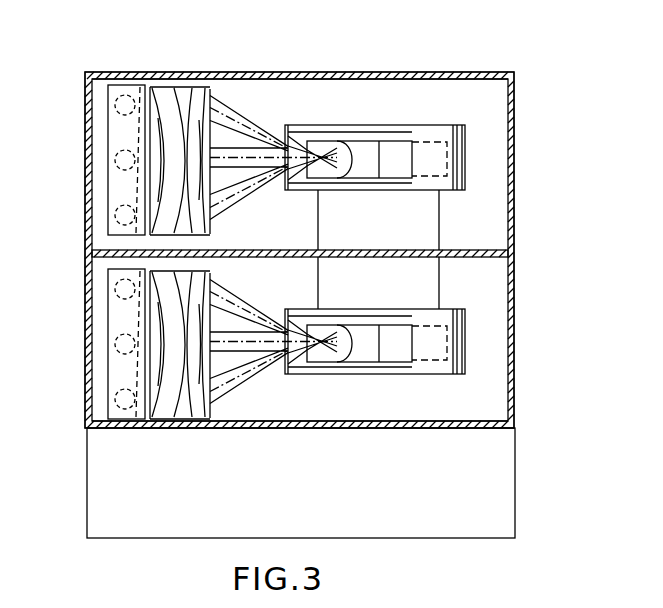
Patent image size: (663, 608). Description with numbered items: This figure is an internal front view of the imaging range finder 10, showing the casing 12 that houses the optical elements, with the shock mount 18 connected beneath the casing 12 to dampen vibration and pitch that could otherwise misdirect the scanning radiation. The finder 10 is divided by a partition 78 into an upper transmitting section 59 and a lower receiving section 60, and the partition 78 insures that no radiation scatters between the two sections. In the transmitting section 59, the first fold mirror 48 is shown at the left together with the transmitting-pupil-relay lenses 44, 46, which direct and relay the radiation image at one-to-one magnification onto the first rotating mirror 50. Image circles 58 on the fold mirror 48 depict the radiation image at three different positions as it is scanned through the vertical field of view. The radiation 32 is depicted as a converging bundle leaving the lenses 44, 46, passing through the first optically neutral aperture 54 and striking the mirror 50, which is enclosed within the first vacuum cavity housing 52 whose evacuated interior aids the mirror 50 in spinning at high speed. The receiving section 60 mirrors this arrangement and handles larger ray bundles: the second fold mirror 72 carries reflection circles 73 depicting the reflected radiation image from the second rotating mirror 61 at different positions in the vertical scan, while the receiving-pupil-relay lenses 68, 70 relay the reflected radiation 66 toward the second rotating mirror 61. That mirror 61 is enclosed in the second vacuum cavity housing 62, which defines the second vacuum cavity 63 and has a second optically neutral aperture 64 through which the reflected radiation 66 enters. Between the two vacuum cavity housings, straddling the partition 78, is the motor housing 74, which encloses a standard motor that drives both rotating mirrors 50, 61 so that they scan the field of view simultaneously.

The imaging range finder 10 is at (514, 52).
The casing 12 is at (513, 225).
The shock mount 18 is at (513, 488).
The radiation 32 is at (262, 203).
The transmitting-pupil-relay lens 44 is at (154, 90).
The transmitting-pupil-relay lens 46 is at (184, 87).
The first fold mirror 48 is at (128, 85).
The first rotating mirror 50 is at (393, 150).
The first vacuum cavity housing 52 is at (467, 135).
The first optically neutral aperture 54 is at (413, 180).
The image circles 58 is at (115, 216).
The transmitting section 59 is at (356, 100).
The receiving section 60 is at (489, 381).
The second rotating mirror 61 is at (366, 367).
The second vacuum cavity housing 62 is at (379, 359).
The second vacuum cavity 63 is at (330, 365).
The second optically neutral aperture 64 is at (454, 320).
The reflected radiation 66 is at (273, 349).
The receiving-pupil-relay lens 68 is at (199, 374).
The receiving-pupil-relay lens 70 is at (161, 374).
The second fold mirror 72 is at (92, 366).
The reflection circles 73 is at (87, 343).
The motor housing 74 is at (315, 235).
The partition 78 is at (497, 256).